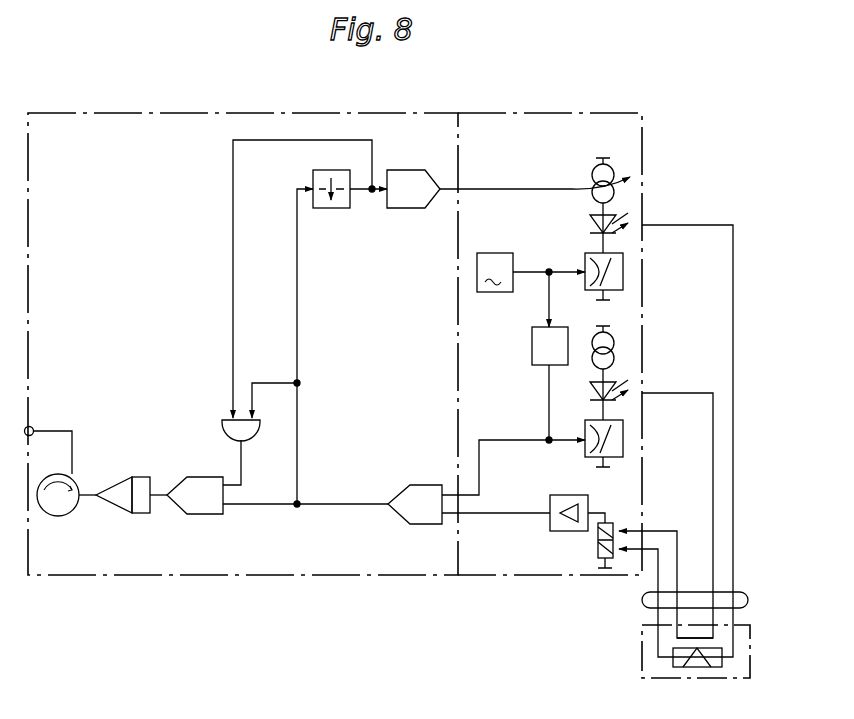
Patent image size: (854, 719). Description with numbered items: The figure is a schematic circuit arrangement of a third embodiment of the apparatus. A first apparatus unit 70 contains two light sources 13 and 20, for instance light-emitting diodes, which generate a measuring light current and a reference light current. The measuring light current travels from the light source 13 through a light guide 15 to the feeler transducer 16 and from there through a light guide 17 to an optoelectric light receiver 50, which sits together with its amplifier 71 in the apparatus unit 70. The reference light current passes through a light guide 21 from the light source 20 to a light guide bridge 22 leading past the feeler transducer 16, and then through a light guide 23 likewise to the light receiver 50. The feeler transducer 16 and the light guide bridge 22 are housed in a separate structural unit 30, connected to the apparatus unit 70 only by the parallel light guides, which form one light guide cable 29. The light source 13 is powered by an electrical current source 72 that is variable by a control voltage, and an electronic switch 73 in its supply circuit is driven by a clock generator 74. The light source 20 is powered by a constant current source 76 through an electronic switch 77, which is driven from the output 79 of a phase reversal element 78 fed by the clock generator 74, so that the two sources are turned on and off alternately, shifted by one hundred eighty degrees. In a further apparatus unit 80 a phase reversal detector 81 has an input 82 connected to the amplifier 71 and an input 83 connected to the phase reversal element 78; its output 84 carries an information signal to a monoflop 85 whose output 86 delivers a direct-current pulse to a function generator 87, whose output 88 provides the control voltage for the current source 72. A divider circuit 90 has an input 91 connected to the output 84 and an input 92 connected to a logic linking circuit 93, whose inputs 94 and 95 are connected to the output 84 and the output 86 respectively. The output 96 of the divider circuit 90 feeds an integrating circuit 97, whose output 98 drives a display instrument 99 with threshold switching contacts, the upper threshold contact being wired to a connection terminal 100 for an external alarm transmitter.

The light source 13 is at (592, 217).
The light guide 15 is at (734, 568).
The feeler transducer 16 is at (673, 664).
The light guide 17 is at (657, 576).
The light source 20 is at (592, 394).
The light guide 21 is at (712, 532).
The light guide bridge 22 is at (690, 640).
The light guide 23 is at (678, 572).
The light guide cable 29 is at (748, 600).
The structural unit 30 is at (750, 643).
The optoelectric light receiver 50 is at (598, 546).
The apparatus unit 70 is at (560, 112).
The amplifier 71 is at (575, 495).
The electrical current source 72 is at (592, 175).
The electronic switch 73 is at (623, 273).
The clock generator 74 is at (496, 253).
The constant current source 76 is at (615, 346).
The electronic switch 77 is at (623, 448).
The phase reversal element 78 is at (532, 348).
The output 79 is at (540, 366).
The apparatus unit 80 is at (292, 112).
The phase reversal detector 81 is at (428, 524).
The input 82 is at (447, 519).
The input 83 is at (446, 484).
The output 84 is at (396, 502).
The monoflop 85 is at (332, 210).
The output 86 is at (352, 192).
The function generator 87 is at (407, 170).
The output 88 is at (436, 193).
The divider circuit 90 is at (203, 515).
The input 91 is at (225, 508).
The input 92 is at (233, 485).
The logic linking circuit 93 is at (222, 432).
The input 94 is at (253, 420).
The input 95 is at (232, 418).
The output 96 is at (167, 500).
The integrating circuit 97 is at (140, 476).
The output 98 is at (96, 498).
The display instrument 99 is at (58, 517).
The connection terminal 100 is at (35, 427).